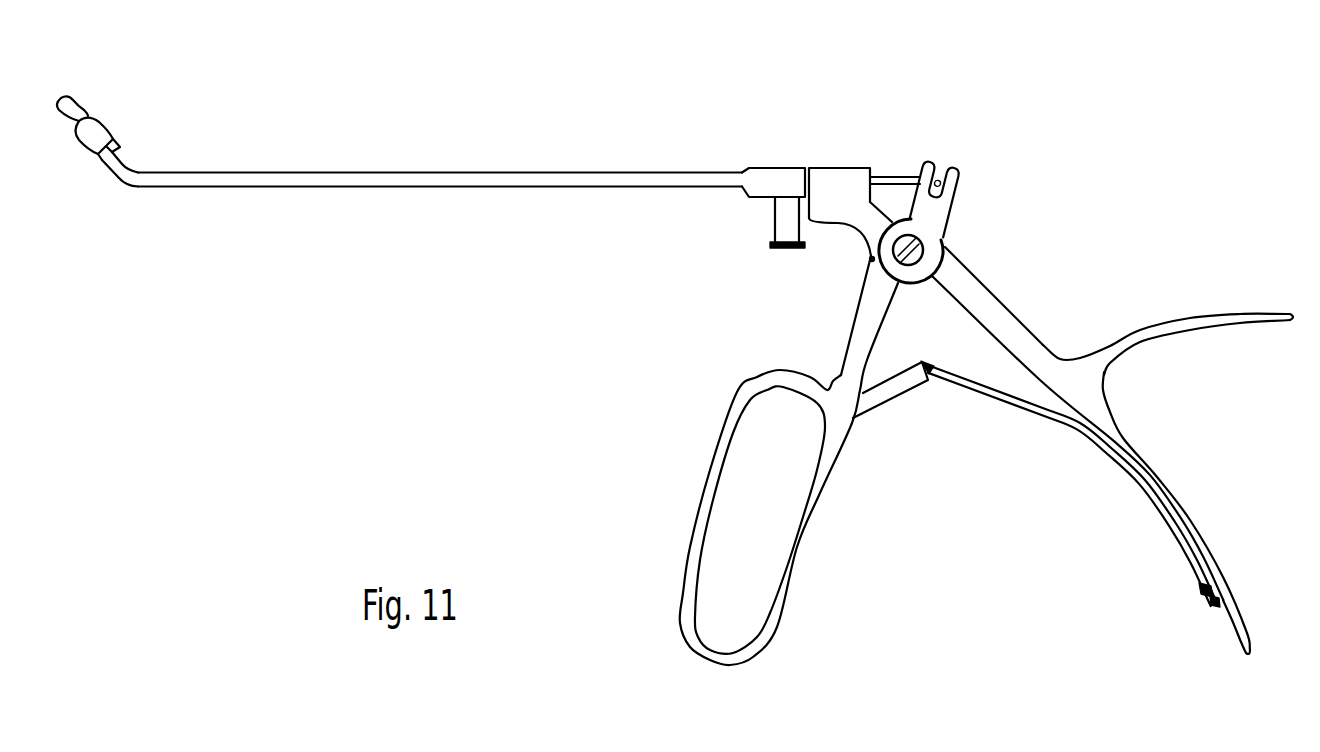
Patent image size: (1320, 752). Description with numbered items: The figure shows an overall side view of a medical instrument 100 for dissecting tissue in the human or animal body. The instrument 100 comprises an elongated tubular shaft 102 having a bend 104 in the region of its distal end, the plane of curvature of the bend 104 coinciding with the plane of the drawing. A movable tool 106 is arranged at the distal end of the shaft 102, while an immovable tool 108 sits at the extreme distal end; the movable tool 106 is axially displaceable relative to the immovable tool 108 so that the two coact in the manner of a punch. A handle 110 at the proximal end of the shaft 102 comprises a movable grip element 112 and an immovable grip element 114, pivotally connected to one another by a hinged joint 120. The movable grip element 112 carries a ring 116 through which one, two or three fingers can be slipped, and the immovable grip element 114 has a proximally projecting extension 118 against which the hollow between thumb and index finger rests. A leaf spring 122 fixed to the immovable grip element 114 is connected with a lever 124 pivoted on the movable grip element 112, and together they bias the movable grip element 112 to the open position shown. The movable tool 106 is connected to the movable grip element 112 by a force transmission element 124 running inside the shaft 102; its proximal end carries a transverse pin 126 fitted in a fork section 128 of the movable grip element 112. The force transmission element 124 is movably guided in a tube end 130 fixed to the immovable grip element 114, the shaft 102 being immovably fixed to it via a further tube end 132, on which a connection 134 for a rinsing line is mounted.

The medical instrument 100 is at (647, 151).
The shaft 102 is at (422, 187).
The bend 104 is at (141, 162).
The movable tool 106 is at (90, 142).
The immovable tool 108 is at (80, 103).
The handle 110 is at (941, 537).
The movable grip element 112 is at (868, 320).
The immovable grip element 114 is at (1000, 322).
The ring 116 is at (684, 565).
The extension 118 is at (1177, 323).
The hinged joint 120 is at (885, 258).
The leaf spring 122 is at (1033, 412).
The lever / force transmission element 124 is at (893, 178).
The pin 126 is at (947, 172).
The fork section 128 is at (962, 175).
The tube end 130 is at (833, 180).
The further tube end 132 is at (767, 178).
The connection 134 is at (786, 218).